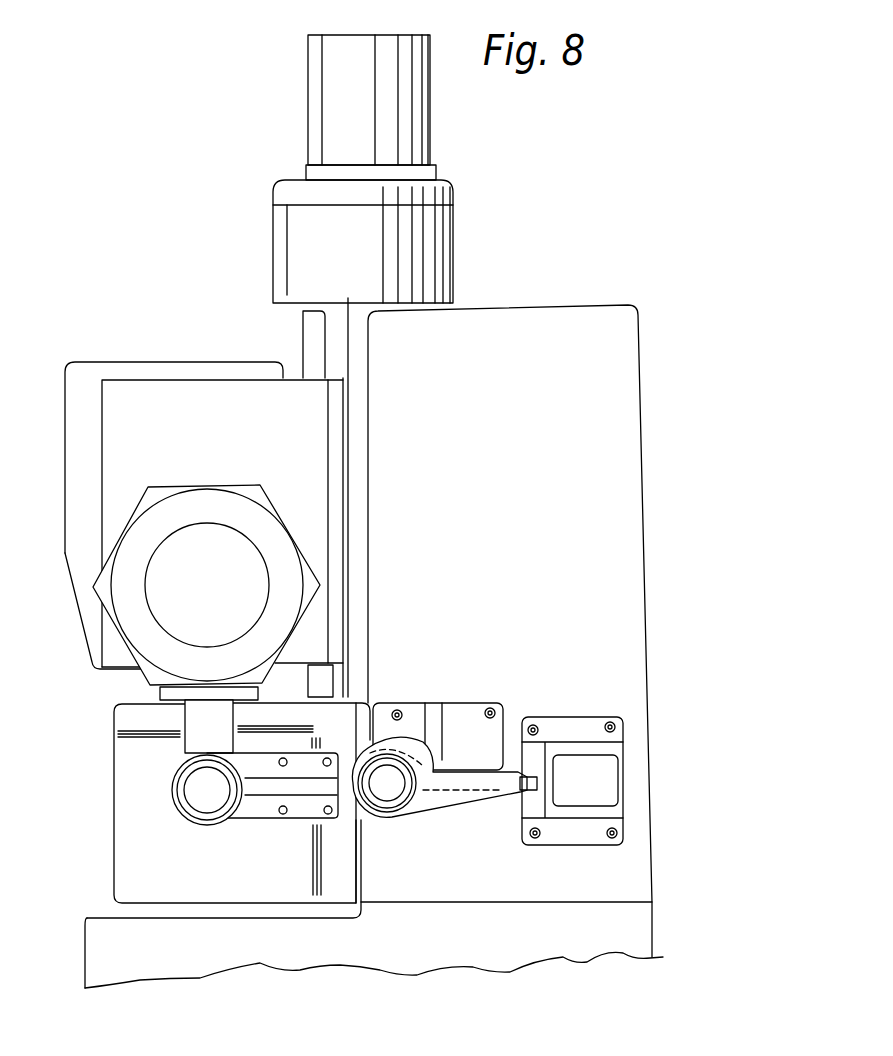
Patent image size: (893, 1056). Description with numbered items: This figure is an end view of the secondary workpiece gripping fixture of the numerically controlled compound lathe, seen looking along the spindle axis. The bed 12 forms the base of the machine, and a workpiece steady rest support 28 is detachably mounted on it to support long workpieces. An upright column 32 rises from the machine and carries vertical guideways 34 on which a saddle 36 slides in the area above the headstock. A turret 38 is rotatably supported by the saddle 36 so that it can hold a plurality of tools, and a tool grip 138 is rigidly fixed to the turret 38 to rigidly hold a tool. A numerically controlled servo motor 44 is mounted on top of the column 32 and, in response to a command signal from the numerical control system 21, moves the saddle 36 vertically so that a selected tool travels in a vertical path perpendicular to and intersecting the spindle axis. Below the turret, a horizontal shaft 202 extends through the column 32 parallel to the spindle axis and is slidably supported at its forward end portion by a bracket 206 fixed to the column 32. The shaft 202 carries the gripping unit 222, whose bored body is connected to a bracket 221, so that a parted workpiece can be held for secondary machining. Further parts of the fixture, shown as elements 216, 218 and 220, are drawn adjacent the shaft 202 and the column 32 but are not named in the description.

The numerical control system 21 is at (300, 115).
The numerically controlled servo motor 44 is at (432, 100).
The column 32 is at (638, 408).
The vertical guideways 34 is at (303, 335).
The saddle 36 is at (143, 387).
The turret 38 is at (104, 589).
The workpiece steady rest support 28 is at (123, 860).
The tool grip 138 is at (185, 748).
The bracket 221 is at (260, 813).
The gripping unit 222 is at (200, 803).
The bracket 206 is at (457, 715).
The lever 216 is at (425, 802).
The horizontal shaft 202 is at (387, 797).
The pin 218 is at (520, 790).
The bracket 220 is at (563, 747).
The bed 12 is at (87, 963).